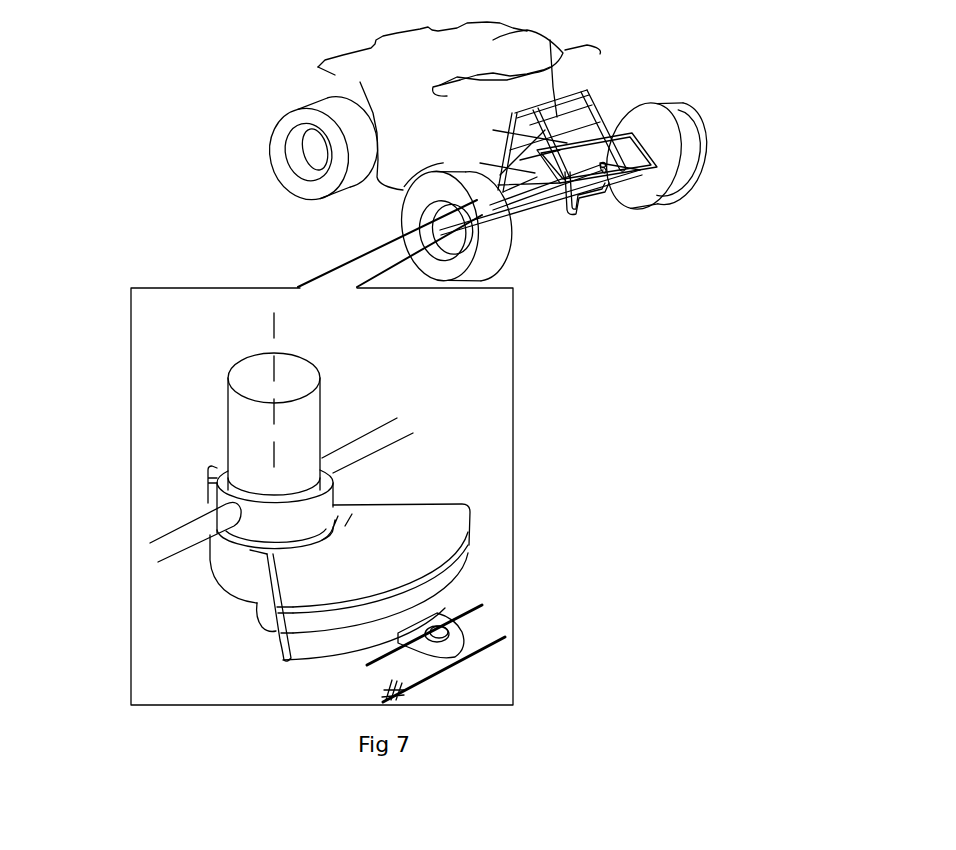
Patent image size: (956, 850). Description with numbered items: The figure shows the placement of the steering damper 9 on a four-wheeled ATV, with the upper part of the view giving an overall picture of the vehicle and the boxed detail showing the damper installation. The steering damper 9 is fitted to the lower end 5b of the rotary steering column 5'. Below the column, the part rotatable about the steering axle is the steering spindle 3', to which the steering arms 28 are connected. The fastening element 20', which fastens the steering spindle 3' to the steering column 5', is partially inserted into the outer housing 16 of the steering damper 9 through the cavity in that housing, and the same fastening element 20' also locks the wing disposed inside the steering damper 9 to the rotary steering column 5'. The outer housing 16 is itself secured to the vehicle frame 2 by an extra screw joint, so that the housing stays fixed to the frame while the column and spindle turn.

The steering column 5′ is at (560, 125).
The steering damper 9 is at (603, 165).
The shaft bracket 5b is at (613, 205).
The steering spindle 3′ is at (308, 513).
The outer housing 16 is at (430, 550).
The steering arms 28 is at (207, 518).
The fastening element 20′ is at (257, 603).
The base plate 2 is at (482, 627).